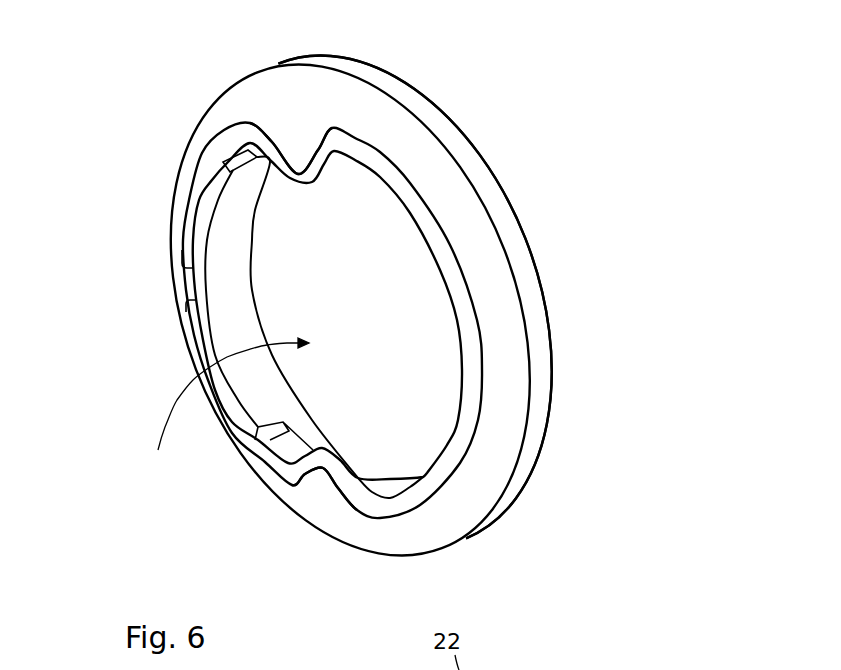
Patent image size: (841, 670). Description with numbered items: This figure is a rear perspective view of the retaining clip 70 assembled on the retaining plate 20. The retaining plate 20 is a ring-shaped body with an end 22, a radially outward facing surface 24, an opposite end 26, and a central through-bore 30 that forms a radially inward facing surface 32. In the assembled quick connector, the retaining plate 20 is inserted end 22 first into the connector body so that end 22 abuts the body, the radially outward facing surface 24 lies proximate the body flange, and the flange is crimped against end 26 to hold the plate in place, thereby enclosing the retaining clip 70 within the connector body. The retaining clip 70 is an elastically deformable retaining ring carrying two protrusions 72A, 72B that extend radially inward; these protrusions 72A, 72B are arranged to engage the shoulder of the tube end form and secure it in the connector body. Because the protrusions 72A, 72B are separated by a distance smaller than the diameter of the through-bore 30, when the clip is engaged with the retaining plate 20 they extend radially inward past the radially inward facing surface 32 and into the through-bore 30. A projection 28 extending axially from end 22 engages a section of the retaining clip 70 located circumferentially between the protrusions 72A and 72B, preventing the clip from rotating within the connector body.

The retaining plate 20 is at (535, 312).
The end 22 is at (488, 463).
The radially outward facing surface 24 is at (462, 152).
The end 26 is at (515, 213).
The projection 28 is at (230, 323).
The through-bore 30 is at (226, 411).
The radially inward facing surface 32 is at (378, 477).
The retaining clip 70 is at (190, 200).
The protrusion 72A is at (312, 141).
The protrusion 72B is at (331, 467).